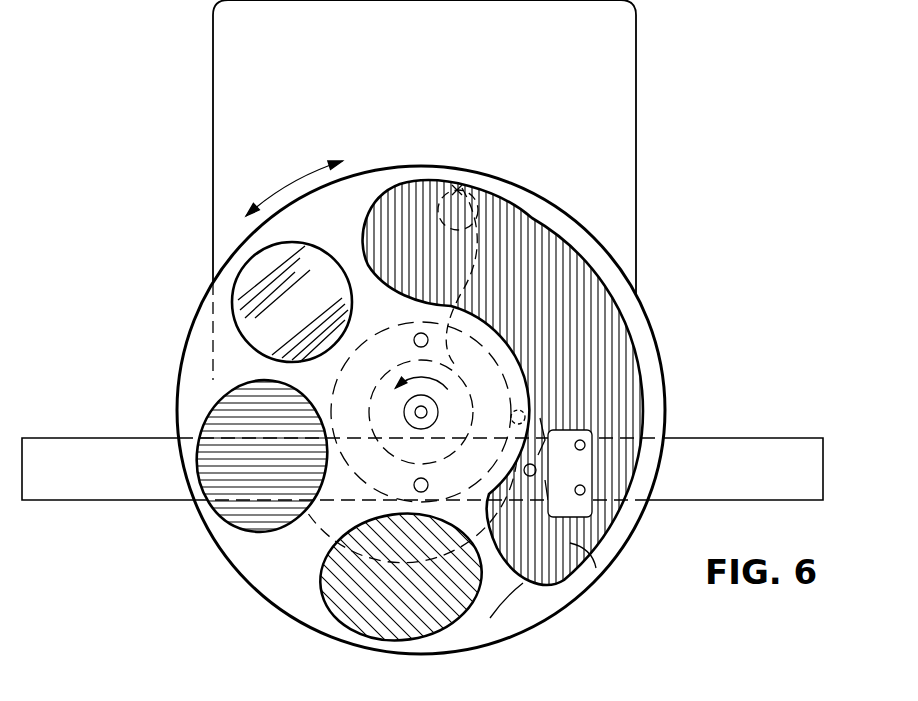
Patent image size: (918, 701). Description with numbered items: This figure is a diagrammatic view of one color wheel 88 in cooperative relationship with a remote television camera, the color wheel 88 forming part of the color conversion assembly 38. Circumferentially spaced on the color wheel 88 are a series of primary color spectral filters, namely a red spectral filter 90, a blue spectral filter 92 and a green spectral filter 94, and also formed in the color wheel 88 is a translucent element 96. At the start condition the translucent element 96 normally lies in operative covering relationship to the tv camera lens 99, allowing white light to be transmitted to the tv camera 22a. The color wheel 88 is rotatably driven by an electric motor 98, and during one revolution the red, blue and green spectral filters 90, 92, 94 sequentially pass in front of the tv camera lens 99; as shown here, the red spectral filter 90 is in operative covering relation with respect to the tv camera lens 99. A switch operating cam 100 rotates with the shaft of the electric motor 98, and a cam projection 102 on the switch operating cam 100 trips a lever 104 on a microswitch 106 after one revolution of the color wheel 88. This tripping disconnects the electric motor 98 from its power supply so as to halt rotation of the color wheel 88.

The tv camera 22a is at (605, 70).
The color conversion assembly 38 is at (657, 180).
The color wheel 88 is at (636, 318).
The red spectral filter 90 is at (572, 545).
The blue spectral filter 92 is at (452, 608).
The green spectral filter 94 is at (235, 488).
The translucent element 96 is at (313, 268).
The electric motor 98 is at (470, 330).
The tv camera lens 99 is at (460, 188).
The switch operating cam 100 is at (480, 345).
The cam projection 102 is at (523, 392).
The lever 104 is at (537, 415).
The microswitch 106 is at (632, 440).